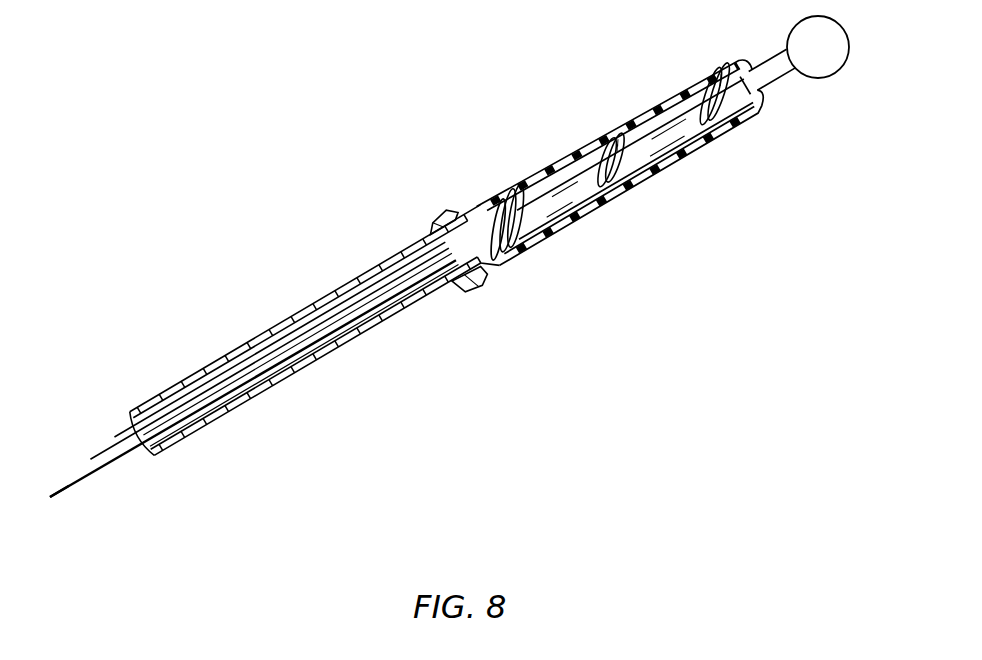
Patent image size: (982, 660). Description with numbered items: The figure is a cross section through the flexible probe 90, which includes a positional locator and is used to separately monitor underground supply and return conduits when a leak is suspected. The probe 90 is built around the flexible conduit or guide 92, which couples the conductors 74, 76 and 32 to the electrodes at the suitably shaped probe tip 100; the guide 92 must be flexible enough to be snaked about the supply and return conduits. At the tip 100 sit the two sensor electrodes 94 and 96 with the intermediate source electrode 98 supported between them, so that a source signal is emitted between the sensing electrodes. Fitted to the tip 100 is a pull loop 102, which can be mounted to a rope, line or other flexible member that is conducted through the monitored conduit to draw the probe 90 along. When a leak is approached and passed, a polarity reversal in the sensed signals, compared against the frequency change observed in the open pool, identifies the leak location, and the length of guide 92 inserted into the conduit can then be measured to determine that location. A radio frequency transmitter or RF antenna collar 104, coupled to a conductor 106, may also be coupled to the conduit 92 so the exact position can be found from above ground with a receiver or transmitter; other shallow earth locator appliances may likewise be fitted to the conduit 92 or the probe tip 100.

The conductor 32 is at (84, 474).
The conductor 74 is at (128, 428).
The conductor 76 is at (104, 451).
The flexible probe 90 is at (298, 148).
The flexible conduit or guide 92 is at (268, 392).
The sensor electrode 94 is at (512, 192).
The sensor electrode 96 is at (700, 98).
The source electrode 98 is at (614, 135).
The probe tip 100 is at (690, 175).
The pull loop 102 is at (840, 70).
The RF transmitter or RF antenna collar 104 is at (444, 218).
The conductor 106 is at (58, 495).